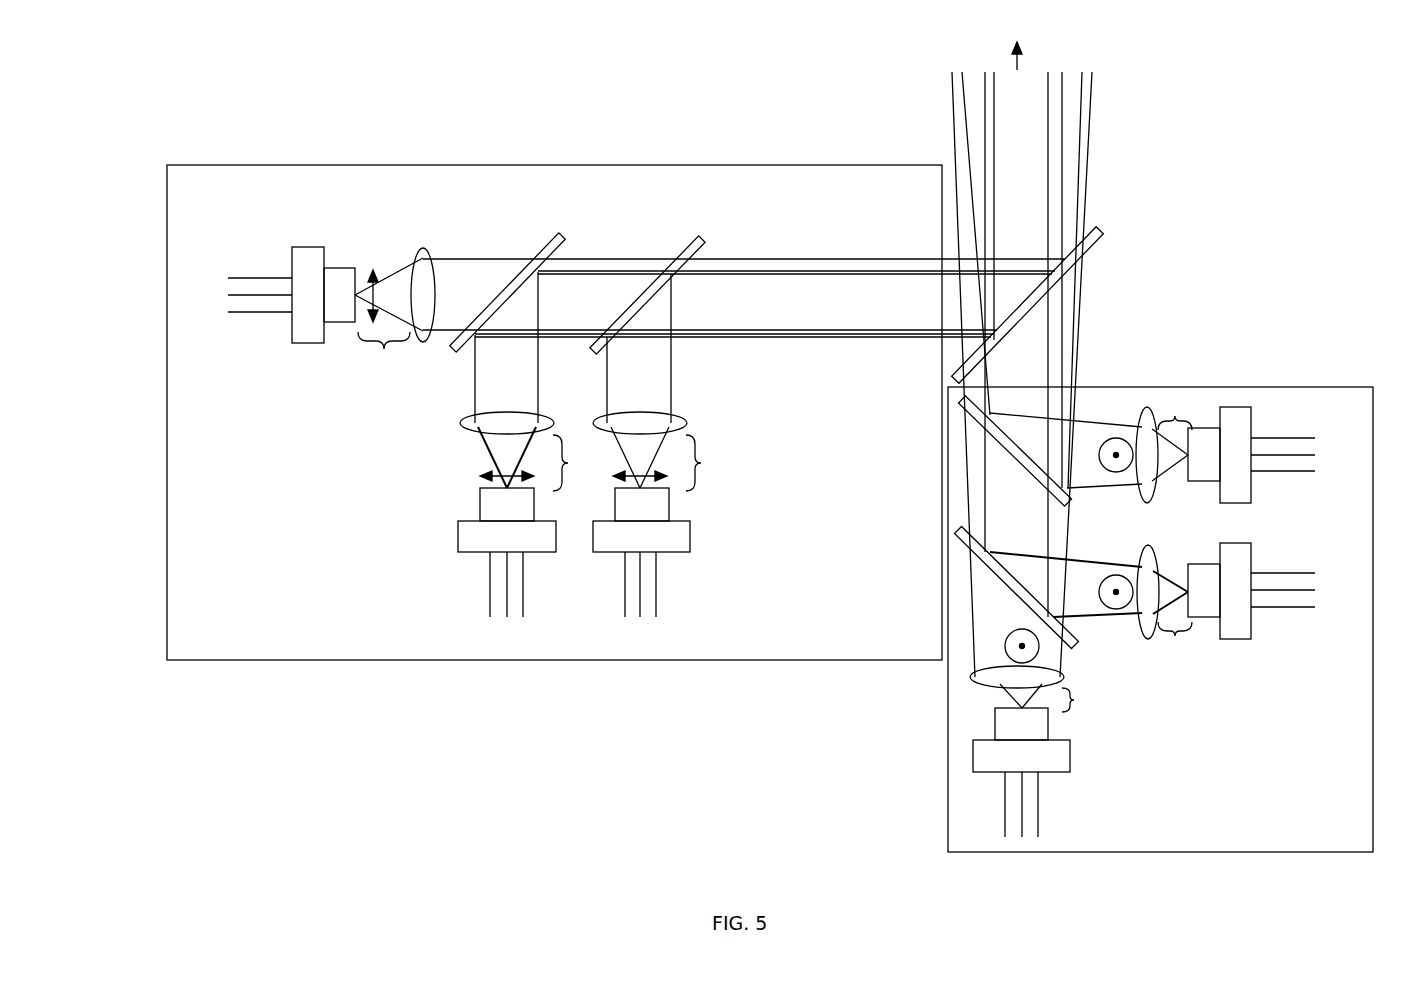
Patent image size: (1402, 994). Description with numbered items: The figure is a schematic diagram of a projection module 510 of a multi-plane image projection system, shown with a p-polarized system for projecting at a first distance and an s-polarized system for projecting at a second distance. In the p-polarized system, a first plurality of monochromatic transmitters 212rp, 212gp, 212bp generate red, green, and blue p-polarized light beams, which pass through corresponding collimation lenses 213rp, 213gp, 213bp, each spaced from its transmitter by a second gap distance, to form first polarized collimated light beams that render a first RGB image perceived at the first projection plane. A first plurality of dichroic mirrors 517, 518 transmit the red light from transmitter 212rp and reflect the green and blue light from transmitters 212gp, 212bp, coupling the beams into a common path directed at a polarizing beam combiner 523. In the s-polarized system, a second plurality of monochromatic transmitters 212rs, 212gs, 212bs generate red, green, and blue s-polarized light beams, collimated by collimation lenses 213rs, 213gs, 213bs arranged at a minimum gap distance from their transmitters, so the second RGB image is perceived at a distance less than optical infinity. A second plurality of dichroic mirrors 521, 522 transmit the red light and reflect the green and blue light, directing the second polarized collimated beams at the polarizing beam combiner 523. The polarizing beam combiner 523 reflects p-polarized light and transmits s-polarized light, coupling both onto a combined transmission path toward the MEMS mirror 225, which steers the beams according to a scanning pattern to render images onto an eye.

The projection module 510 is at (192, 74).
The MEMS mirror 225 is at (1112, 28).
The monochromatic transmitter 212rp is at (310, 247).
The collimation lens 213rp is at (419, 249).
The dichroic mirror 517 is at (567, 231).
The dichroic mirror 518 is at (704, 231).
The polarizing beam combiner 523 is at (1100, 245).
The dichroic mirror 522 is at (957, 405).
The dichroic mirror 521 is at (955, 537).
The collimation lens 213gp is at (469, 422).
The monochromatic transmitter 212gp is at (458, 537).
The collimation lens 213bp is at (680, 421).
The monochromatic transmitter 212bp is at (690, 537).
The collimation lens 213bs is at (1138, 495).
The monochromatic transmitter 212bs is at (1252, 490).
The collimation lens 213gs is at (1150, 640).
The monochromatic transmitter 212gs is at (1240, 641).
The collimation lens 213rs is at (968, 676).
The monochromatic transmitter 212rs is at (973, 757).